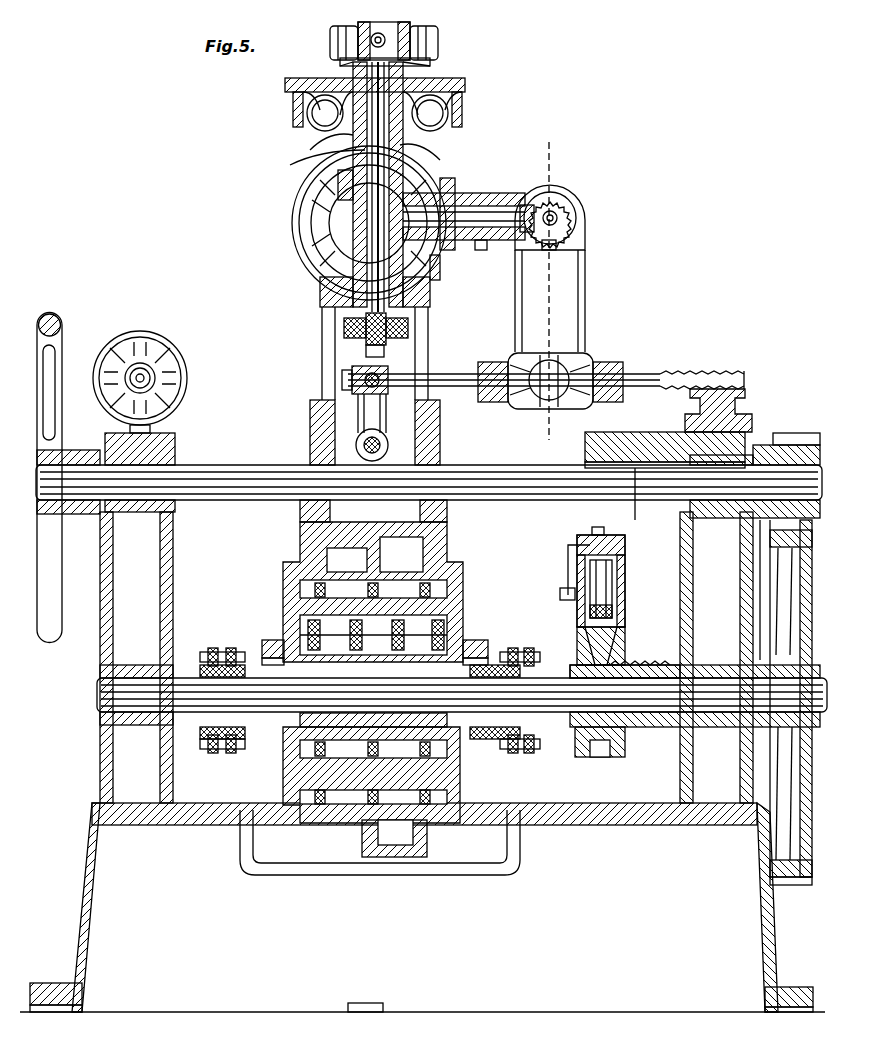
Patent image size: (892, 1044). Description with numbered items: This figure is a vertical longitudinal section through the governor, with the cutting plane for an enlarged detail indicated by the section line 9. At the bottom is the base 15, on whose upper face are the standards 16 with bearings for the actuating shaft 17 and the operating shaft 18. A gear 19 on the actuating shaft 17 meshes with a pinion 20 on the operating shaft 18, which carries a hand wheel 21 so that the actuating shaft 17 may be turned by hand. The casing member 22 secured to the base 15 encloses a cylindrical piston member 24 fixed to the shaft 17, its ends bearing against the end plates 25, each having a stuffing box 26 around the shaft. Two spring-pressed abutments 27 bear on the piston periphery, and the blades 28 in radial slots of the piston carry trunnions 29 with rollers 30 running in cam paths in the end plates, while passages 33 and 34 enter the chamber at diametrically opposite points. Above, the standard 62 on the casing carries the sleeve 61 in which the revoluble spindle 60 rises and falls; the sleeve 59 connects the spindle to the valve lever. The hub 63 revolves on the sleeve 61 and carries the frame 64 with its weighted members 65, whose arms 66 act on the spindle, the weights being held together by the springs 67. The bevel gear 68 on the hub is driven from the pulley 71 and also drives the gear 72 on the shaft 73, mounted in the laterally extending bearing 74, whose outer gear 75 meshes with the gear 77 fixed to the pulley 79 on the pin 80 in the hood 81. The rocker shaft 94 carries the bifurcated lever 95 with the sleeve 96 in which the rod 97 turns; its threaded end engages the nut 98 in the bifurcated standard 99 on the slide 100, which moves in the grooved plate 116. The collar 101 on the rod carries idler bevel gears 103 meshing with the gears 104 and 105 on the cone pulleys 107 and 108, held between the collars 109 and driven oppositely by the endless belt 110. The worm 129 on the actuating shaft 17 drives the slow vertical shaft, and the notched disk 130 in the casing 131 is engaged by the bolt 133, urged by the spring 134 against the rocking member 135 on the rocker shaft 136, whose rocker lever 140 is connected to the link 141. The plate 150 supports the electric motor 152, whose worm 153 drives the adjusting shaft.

The section line 9— 9 is at (544, 287).
The base 15 is at (96, 900).
The standards 16 is at (100, 757).
The actuating shaft 17 is at (97, 700).
The operating shaft 18 is at (232, 470).
The gear 19 is at (793, 885).
The pinion 20 is at (790, 422).
The hand wheel 21 is at (45, 640).
The casing member 22 is at (440, 545).
The cylindrical piston member 24 is at (300, 730).
The end plates 25 is at (283, 785).
The stuffing box 26 is at (215, 753).
The spring-pressed abutments 27 is at (395, 598).
The blades 28 is at (308, 640).
The trunnion 29 is at (262, 660).
The roller 30 is at (262, 648).
The passage 33 is at (327, 560).
The passage 34 is at (413, 845).
The sleeve 59 is at (390, 340).
The revoluble spindle 60 is at (372, 310).
The sleeve 61 is at (304, 162).
The standard 62 is at (340, 228).
The hub 63 is at (428, 154).
The frame 64 is at (338, 26).
The weighted members 65 is at (315, 147).
The arm 66 is at (378, 33).
The springs 67 is at (310, 125).
The bevel gear 68 is at (338, 185).
The pulley 71 is at (292, 215).
The gear 72 is at (450, 185).
The shaft 73 is at (488, 210).
The laterally extending bearing 74 is at (478, 250).
The gear 75 is at (528, 205).
The gear 77 is at (562, 205).
The pulley 79 is at (570, 245).
The pin 80 is at (565, 215).
The hood 81 is at (585, 215).
The rocker shaft 94 is at (388, 448).
The bifurcated lever 95 is at (364, 415).
The sleeve 96 is at (352, 378).
The rod 97 is at (450, 370).
The nut 98 is at (712, 372).
The bifurcated standard 99 is at (760, 405).
The slide 100 is at (640, 432).
The collar 101 is at (565, 405).
The bevel gears 103 is at (545, 355).
The gear 104 is at (530, 405).
The gear 105 is at (569, 339).
The cone pulley 107 is at (495, 362).
The cone pulley 108 is at (605, 362).
The collars 109 is at (623, 368).
The endless belt 110 is at (600, 300).
The grooved plate 116 is at (646, 497).
The worm 129 is at (625, 661).
The notched disk 130 is at (625, 640).
The casing 131 is at (575, 775).
The bolt 133 is at (612, 612).
The spring 134 is at (606, 580).
The rocking member 135 is at (598, 527).
The rocker shaft 136 is at (625, 550).
The rocker lever 140 is at (568, 575).
The link 141 is at (560, 600).
The plate 150 is at (175, 445).
The electric motor 152 is at (140, 331).
The worm 153 is at (150, 370).